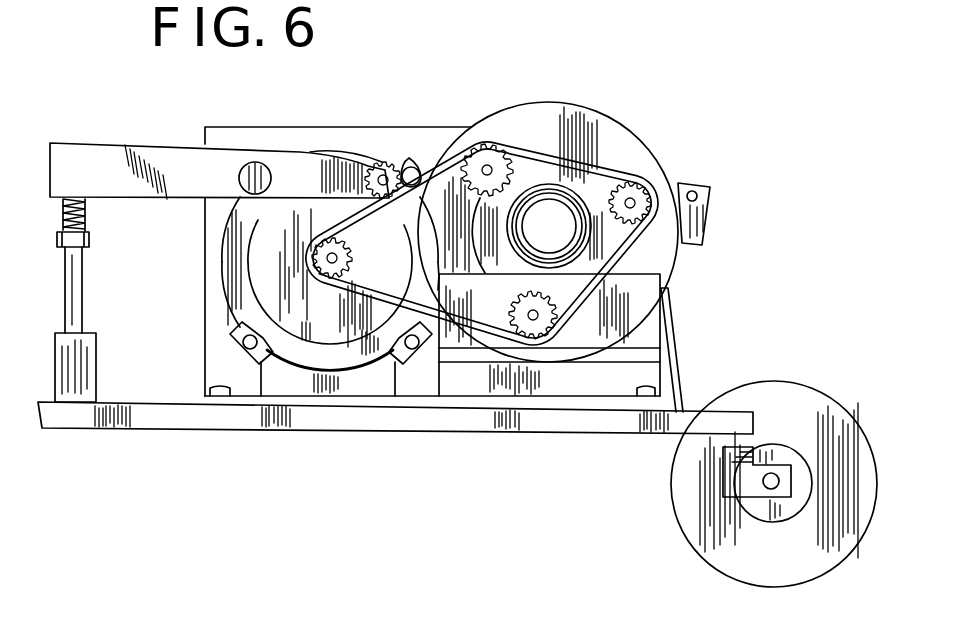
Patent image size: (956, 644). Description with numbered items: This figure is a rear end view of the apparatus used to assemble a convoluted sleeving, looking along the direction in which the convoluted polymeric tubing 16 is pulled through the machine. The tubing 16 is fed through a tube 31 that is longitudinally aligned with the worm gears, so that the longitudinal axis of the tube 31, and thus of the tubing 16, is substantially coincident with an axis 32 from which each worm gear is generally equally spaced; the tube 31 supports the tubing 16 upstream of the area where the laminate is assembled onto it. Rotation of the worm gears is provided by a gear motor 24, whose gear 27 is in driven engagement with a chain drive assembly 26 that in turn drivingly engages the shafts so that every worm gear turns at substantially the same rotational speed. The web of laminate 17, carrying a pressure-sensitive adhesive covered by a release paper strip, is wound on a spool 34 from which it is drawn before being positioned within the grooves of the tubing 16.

The convoluted polymeric tubing 16 is at (572, 228).
The web of laminate 17 is at (682, 360).
The gear motor 24 is at (403, 267).
The chain drive assembly 26 is at (507, 144).
The gear 27 is at (343, 284).
The tube 31 is at (550, 228).
The axis 32 is at (566, 237).
The spool 34 is at (788, 564).